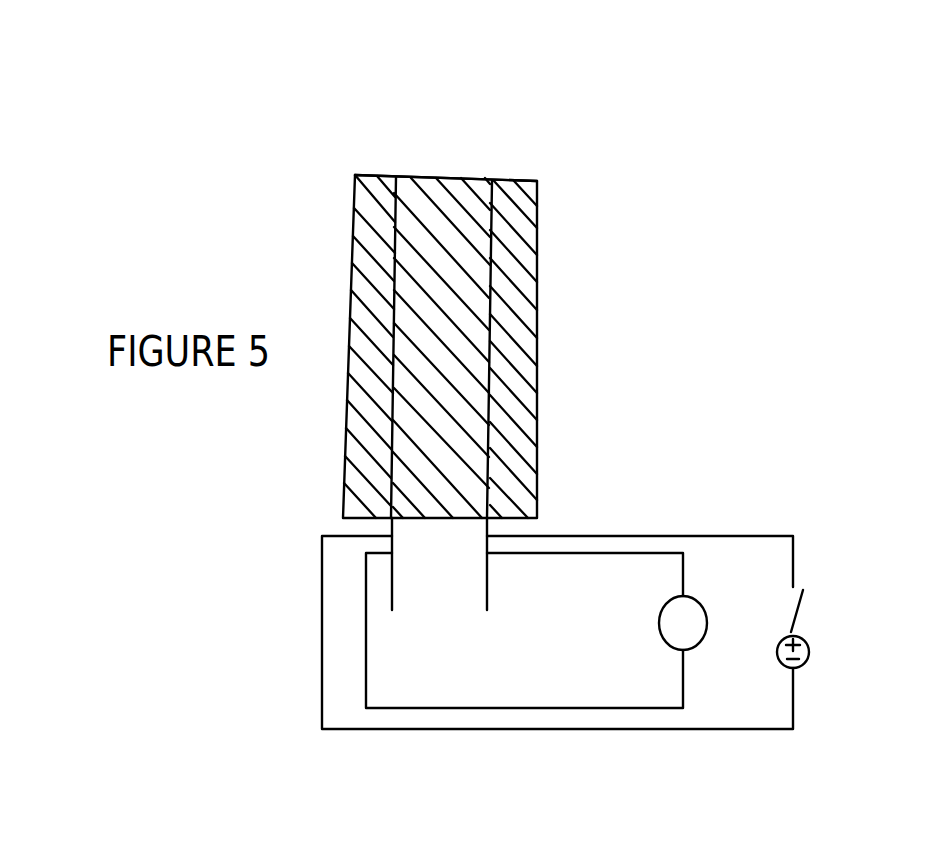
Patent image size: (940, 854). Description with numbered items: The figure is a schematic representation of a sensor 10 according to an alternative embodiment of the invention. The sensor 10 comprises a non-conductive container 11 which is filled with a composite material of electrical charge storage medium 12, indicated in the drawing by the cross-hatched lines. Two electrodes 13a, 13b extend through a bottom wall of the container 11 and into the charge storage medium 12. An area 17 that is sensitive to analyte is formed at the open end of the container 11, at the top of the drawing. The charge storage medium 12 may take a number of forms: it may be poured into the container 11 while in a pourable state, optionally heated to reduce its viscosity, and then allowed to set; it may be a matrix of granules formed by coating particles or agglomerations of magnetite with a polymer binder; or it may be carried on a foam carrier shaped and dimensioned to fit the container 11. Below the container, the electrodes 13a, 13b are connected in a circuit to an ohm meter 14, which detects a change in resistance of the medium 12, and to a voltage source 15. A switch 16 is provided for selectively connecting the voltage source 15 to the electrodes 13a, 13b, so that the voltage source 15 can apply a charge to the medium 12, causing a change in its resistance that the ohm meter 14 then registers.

The sensor 10 is at (612, 339).
The non-conductive container 11 is at (545, 248).
The electrical charge storage medium 12 is at (475, 250).
The electrode 13a is at (490, 573).
The electrode 13b is at (395, 598).
The ohm meter 14 is at (698, 600).
The voltage source 15 is at (805, 667).
The switch 16 is at (803, 605).
The area sensitive to analyte 17 is at (442, 172).